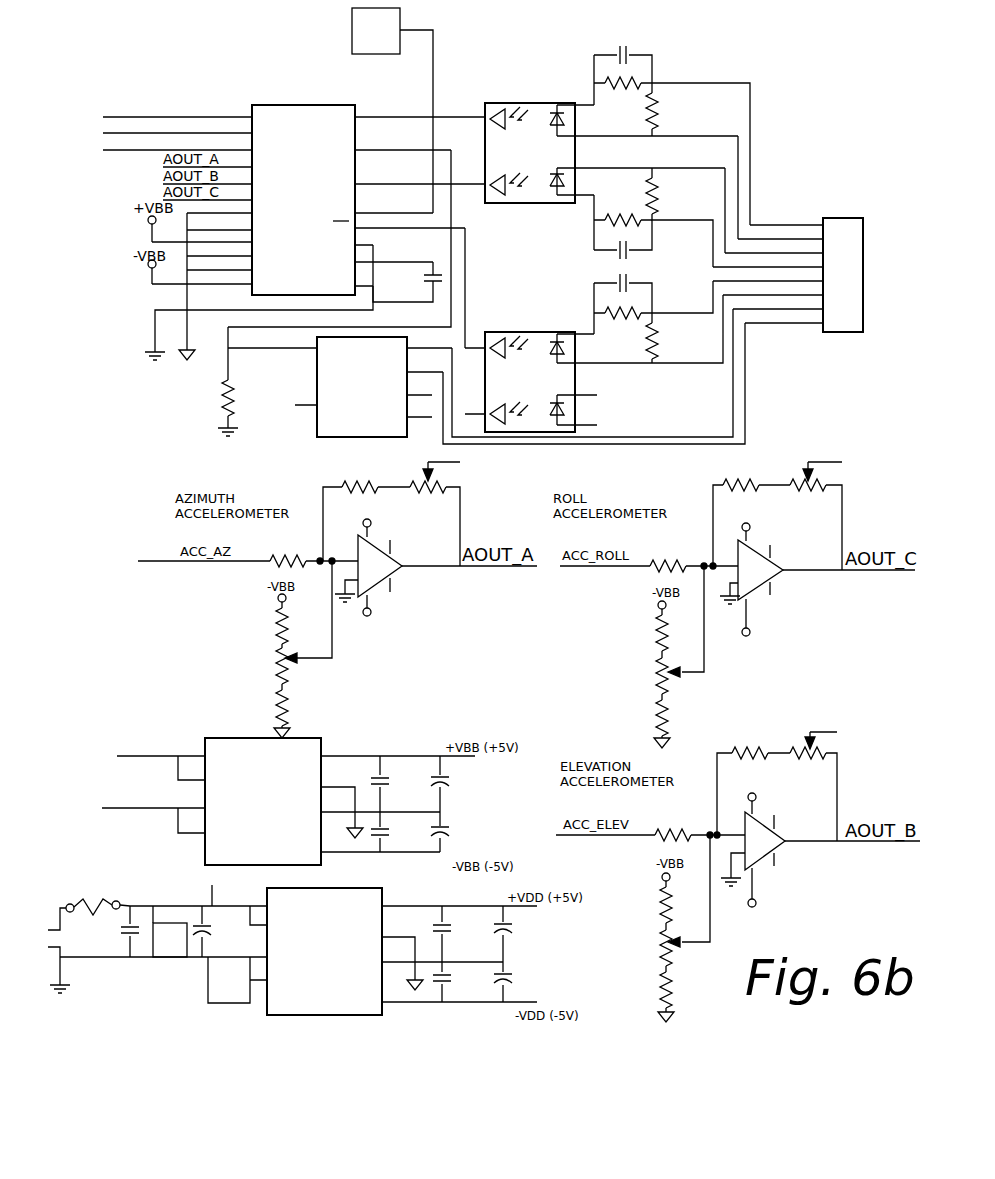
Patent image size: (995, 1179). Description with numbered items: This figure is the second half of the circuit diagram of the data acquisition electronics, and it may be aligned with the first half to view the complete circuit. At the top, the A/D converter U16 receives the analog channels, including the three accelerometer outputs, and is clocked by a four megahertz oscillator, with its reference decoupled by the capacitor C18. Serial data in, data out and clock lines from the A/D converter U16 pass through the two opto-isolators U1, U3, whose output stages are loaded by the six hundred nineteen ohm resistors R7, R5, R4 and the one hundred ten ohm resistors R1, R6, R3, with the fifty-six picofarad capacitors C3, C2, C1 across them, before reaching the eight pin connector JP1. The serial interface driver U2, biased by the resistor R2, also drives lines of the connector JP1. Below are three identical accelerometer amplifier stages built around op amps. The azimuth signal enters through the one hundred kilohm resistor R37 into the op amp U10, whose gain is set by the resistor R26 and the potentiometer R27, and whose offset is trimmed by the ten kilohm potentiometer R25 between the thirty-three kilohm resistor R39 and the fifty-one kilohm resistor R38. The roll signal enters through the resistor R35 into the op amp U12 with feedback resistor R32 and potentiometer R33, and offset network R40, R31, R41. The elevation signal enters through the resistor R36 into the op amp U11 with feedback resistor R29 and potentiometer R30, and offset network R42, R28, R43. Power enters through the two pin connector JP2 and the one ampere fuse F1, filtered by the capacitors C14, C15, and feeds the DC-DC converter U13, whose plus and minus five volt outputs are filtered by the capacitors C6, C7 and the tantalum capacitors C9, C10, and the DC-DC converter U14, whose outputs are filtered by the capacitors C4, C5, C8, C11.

The A/D converter U16 is at (294, 151).
The opto-isolator U1 is at (513, 103).
The opto-isolator U3 is at (513, 332).
The RS232/422 driver U2 is at (340, 385).
The 8 pin connector JP1 is at (788, 263).
The 2 pin connector JP2 is at (170, 931).
The 56 pF capacitor C1 is at (623, 303).
The 56 pF capacitor C2 is at (623, 239).
The 56 pF capacitor C3 is at (623, 68).
The 0.1 μF capacitor C18 is at (407, 282).
The 110 ohm resistor R1 is at (680, 109).
The 4.75K resistor R2 is at (245, 381).
The 110 ohm resistor R3 is at (680, 338).
The 619 ohm resistor R4 is at (649, 315).
The 619 ohm resistor R5 is at (620, 214).
The 110 ohm resistor R6 is at (680, 217).
The 619 ohm resistor R7 is at (668, 151).
The 100K resistor R37 is at (286, 555).
The op amp U10 is at (436, 567).
The 453K resistor R26 is at (359, 472).
The 100K potentiometer R27 is at (435, 493).
The 33K resistor R39 is at (298, 625).
The 10K potentiometer R25 is at (262, 665).
The 51K resistor R38 is at (299, 708).
The 100K resistor R35 is at (667, 559).
The op amp U12 is at (810, 581).
The 453K resistor R32 is at (739, 478).
The 100K potentiometer R33 is at (816, 492).
The 33K resistor R40 is at (679, 633).
The 10K potentiometer R31 is at (642, 676).
The 51K resistor R41 is at (679, 719).
The 100K resistor R36 is at (672, 827).
The op amp U11 is at (816, 852).
The 453K resistor R29 is at (749, 735).
The 100K potentiometer R30 is at (813, 762).
The 33K resistor R42 is at (683, 904).
The 10K potentiometer R28 is at (646, 948).
The 51K resistor R43 is at (683, 995).
The DC-DC converter U13 is at (275, 738).
The 0.1 μF capacitor C6 is at (394, 784).
The 0.1 μF capacitor C7 is at (394, 832).
The 4.7 μF tantalum capacitor C9 is at (459, 784).
The 4.7 μF tantalum capacitor C10 is at (459, 832).
The DC-DC converter U14 is at (355, 893).
The 0.1 μF capacitor C4 is at (457, 934).
The 0.1 μF capacitor C5 is at (457, 982).
The 4.7 μF tantalum capacitor C8 is at (522, 934).
The 4.7 μF tantalum capacitor C11 is at (522, 982).
The 1A fuse F1 is at (89, 937).
The 0.1 μF capacitor C14 is at (122, 931).
The 10 μF capacitor C15 is at (218, 931).